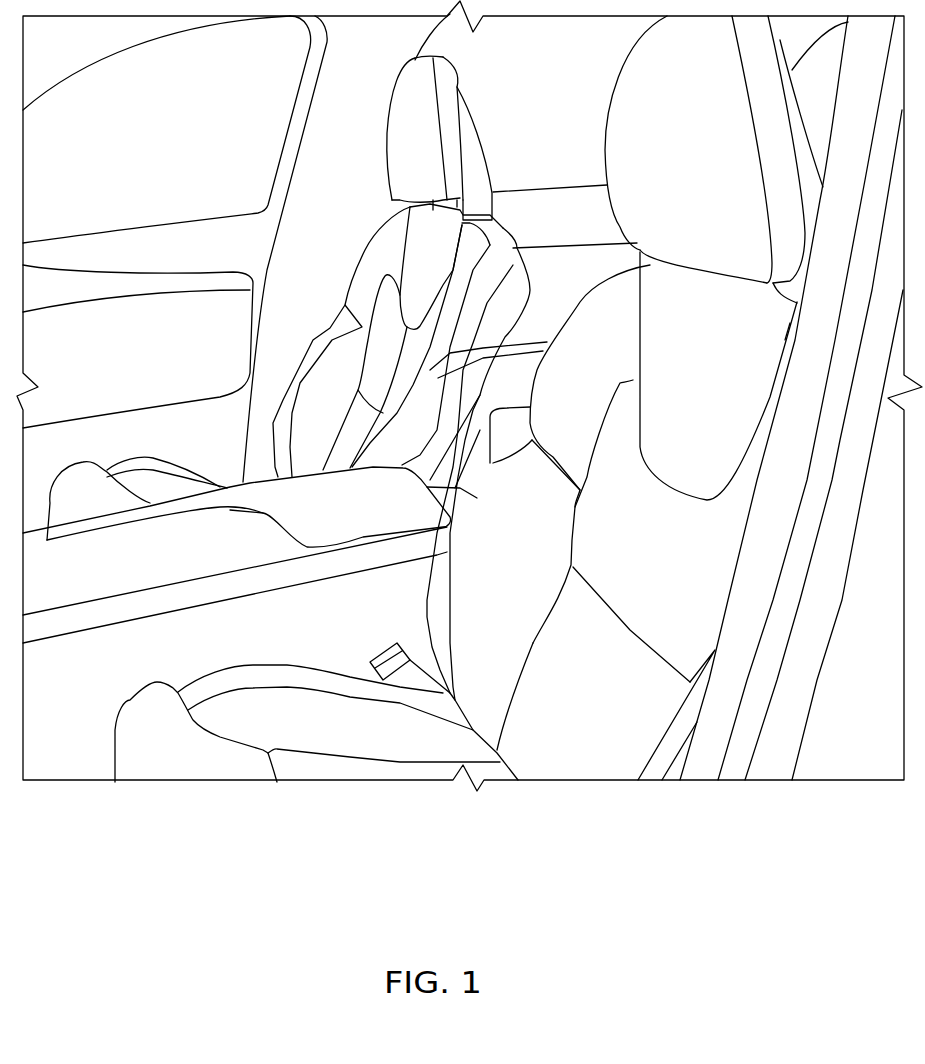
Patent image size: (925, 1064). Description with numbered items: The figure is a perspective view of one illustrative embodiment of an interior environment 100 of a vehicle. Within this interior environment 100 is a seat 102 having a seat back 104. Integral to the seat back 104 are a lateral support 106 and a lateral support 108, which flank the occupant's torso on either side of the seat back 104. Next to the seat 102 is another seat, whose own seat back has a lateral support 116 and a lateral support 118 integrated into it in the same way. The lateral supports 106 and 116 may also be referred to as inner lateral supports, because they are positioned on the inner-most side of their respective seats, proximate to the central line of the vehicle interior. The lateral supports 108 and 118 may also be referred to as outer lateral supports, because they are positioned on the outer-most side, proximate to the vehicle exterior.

The interior environment 100 is at (450, 907).
The seat 102 is at (405, 780).
The seat back 104 is at (582, 762).
The lateral support 106 is at (540, 572).
The lateral support 108 is at (678, 735).
The lateral support 116 is at (387, 413).
The lateral support 118 is at (340, 377).